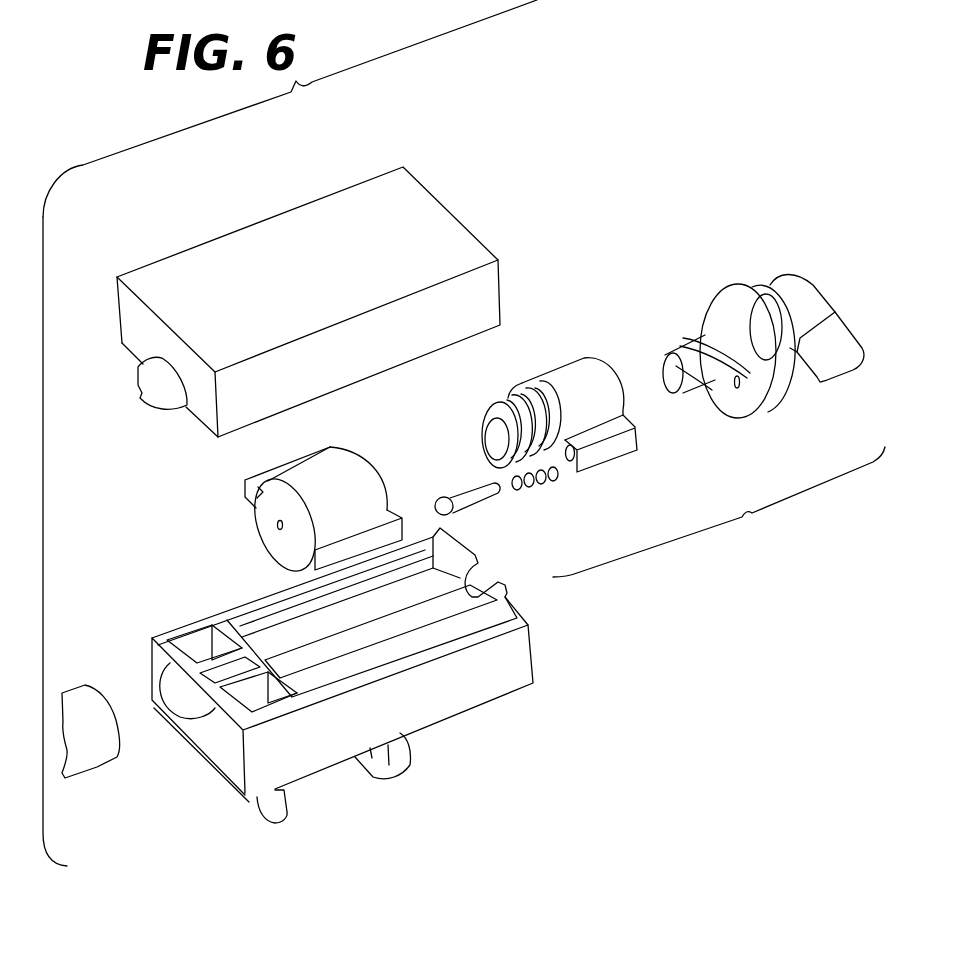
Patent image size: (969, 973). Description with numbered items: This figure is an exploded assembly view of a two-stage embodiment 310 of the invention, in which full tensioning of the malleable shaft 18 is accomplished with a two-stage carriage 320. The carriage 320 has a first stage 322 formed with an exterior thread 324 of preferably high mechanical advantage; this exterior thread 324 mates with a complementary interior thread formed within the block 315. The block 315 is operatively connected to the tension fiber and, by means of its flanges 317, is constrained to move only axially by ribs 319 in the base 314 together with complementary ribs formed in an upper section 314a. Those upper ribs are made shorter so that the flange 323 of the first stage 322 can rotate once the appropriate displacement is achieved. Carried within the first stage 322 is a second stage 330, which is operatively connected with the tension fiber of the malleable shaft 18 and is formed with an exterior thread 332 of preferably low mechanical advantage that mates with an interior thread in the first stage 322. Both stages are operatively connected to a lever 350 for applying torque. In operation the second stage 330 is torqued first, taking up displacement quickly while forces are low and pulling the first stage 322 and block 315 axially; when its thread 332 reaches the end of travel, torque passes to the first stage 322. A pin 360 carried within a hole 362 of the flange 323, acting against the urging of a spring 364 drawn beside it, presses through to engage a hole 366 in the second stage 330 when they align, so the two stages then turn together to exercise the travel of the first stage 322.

The malleable shaft 18 is at (98, 766).
The embodiment 310 is at (213, 204).
The base 314 is at (533, 653).
The upper section 314a is at (120, 315).
The block 315 is at (267, 518).
The flanges 317 is at (352, 523).
The ribs 319 is at (390, 602).
The two-stage carriage 320 is at (719, 512).
The first stage 322 is at (560, 362).
The flange 323 is at (613, 450).
The exterior thread 324 is at (497, 388).
The second stage 330 is at (708, 285).
The exterior thread 332 is at (665, 345).
The lever 350 is at (791, 290).
The pin 360 is at (464, 490).
The hole 362 is at (571, 462).
The spring 364 is at (535, 490).
The hole 366 is at (740, 396).